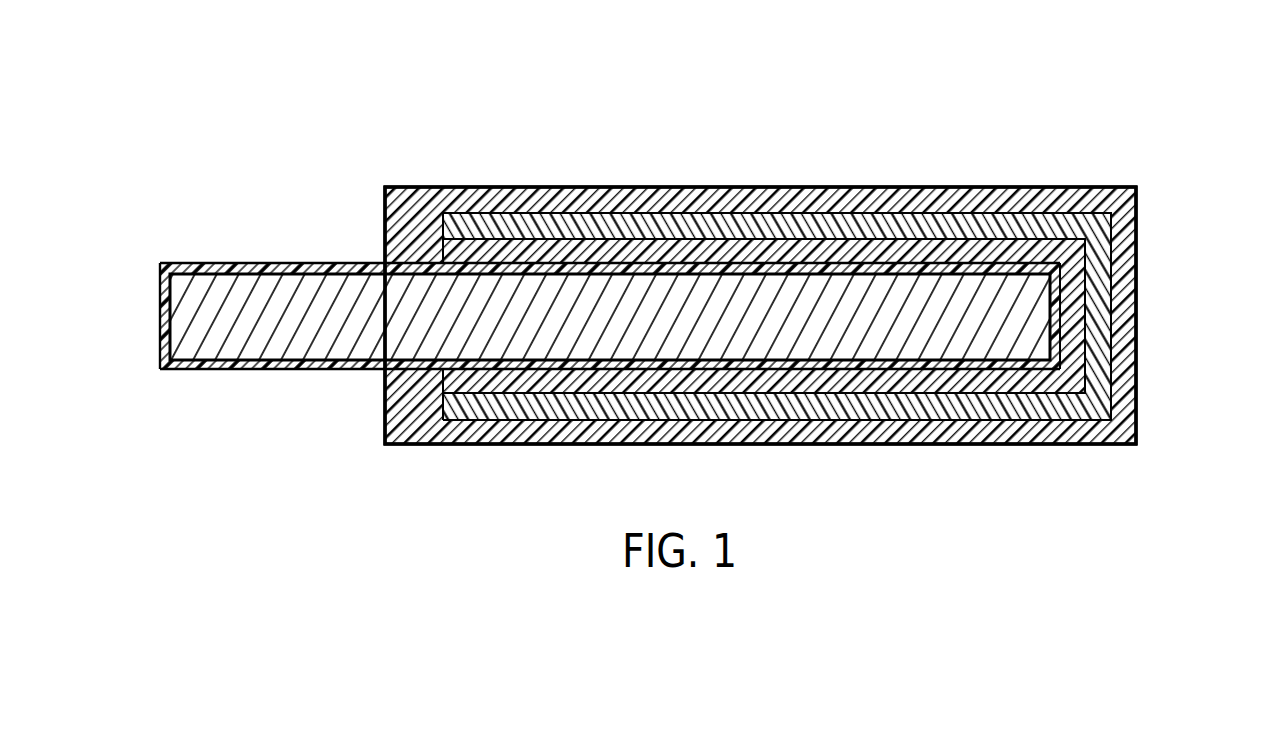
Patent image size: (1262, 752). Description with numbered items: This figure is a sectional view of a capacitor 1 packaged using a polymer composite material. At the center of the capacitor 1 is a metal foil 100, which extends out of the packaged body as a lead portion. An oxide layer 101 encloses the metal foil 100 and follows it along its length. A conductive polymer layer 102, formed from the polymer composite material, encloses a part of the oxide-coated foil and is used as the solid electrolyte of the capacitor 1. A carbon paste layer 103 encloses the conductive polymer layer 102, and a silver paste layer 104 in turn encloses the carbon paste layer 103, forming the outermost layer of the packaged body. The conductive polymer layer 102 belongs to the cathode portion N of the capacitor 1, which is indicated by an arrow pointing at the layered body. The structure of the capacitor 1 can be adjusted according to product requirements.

The capacitor 1 is at (372, 50).
The cathode portion N is at (815, 178).
The metal foil 100 is at (962, 345).
The oxide layer 101 is at (1057, 354).
The conductive polymer layer 102 is at (1067, 288).
The carbon paste layer 103 is at (1090, 227).
The silver paste layer 104 is at (1035, 205).